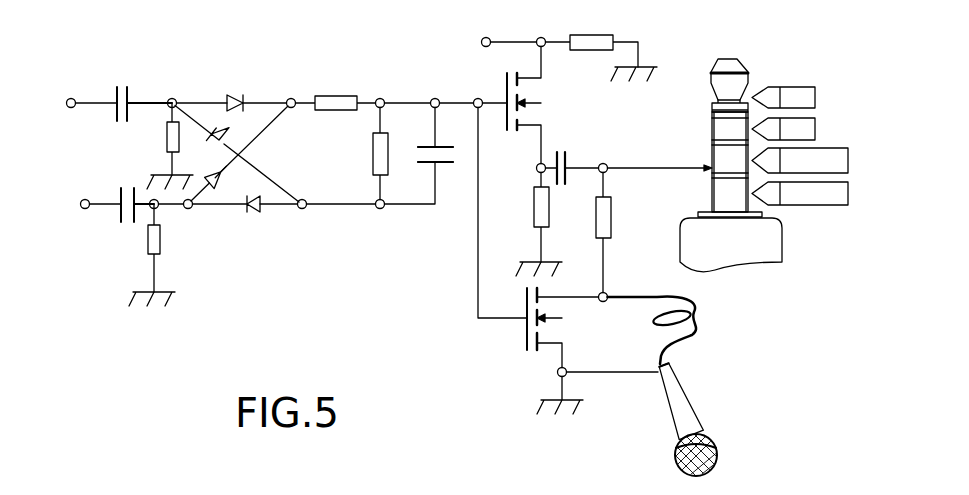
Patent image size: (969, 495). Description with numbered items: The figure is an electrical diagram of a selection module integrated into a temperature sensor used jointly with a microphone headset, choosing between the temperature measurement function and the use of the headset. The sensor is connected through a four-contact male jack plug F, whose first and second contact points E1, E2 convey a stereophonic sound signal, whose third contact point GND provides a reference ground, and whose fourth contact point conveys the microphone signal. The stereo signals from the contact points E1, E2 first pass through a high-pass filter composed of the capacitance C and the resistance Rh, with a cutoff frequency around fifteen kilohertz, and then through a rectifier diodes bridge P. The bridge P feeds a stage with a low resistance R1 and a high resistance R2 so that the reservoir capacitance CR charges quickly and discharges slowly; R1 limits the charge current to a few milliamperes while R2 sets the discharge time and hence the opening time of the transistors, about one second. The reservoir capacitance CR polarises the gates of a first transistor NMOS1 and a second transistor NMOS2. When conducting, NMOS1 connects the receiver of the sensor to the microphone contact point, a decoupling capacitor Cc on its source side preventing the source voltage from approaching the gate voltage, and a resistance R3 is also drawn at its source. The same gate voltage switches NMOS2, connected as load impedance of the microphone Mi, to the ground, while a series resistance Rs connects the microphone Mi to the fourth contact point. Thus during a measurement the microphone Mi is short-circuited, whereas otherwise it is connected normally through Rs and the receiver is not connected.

The first contact point E1 is at (76, 106).
The second contact point E2 is at (81, 206).
The capacitance C is at (142, 143).
The resistance Rh is at (162, 204).
The rectifier diodes bridge P is at (237, 224).
The resistance R1 is at (336, 84).
The resistance R2 is at (348, 154).
The reservoir capacitance CR is at (429, 152).
The first transistor NMOS1 is at (547, 98).
The decoupling capacitor Cc is at (625, 156).
The third resistor R3 is at (529, 225).
The series resistance Rs is at (624, 233).
The second transistor NMOS2 is at (518, 327).
The third contact point GND is at (555, 409).
The microphone Mi is at (675, 402).
The plug F is at (753, 247).